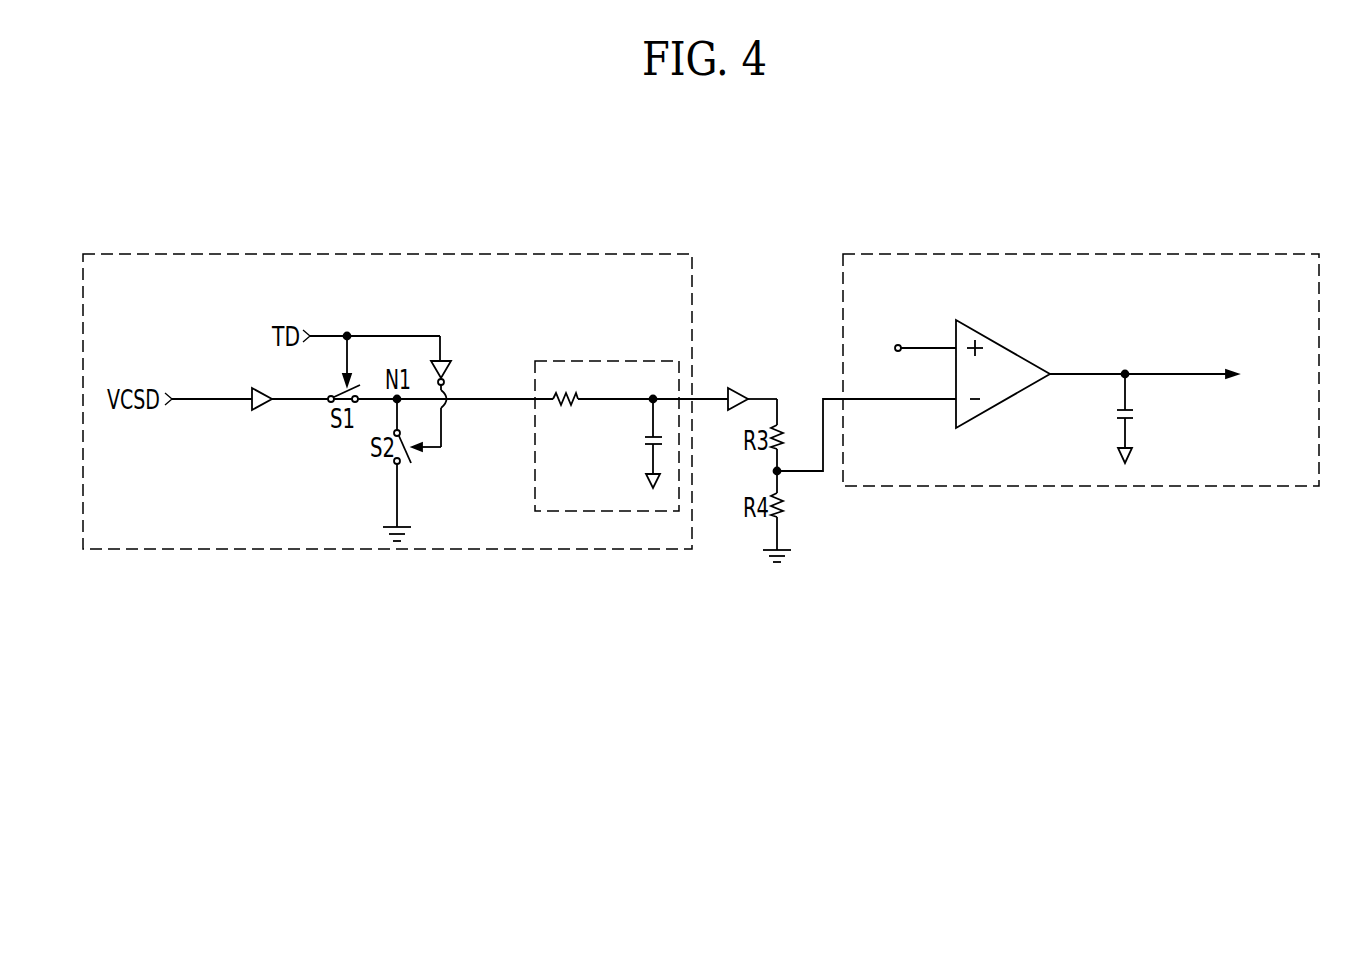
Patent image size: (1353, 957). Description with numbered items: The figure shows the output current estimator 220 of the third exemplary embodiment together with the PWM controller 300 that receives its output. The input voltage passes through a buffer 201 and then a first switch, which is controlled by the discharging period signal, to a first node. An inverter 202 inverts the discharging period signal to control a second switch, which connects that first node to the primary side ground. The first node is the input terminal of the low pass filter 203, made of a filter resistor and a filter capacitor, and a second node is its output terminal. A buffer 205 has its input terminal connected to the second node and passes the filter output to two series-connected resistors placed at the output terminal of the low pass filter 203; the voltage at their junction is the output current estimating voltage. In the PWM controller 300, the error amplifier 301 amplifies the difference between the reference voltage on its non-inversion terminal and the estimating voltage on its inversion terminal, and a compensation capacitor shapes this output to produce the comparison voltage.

The buffer 201 is at (253, 391).
The inverter 202 is at (452, 371).
The low pass filter 203 is at (615, 361).
The buffer 205 is at (737, 388).
The output current estimator 220 is at (407, 254).
The PWM controller 300 is at (1081, 343).
The error amplifier 301 is at (1003, 344).